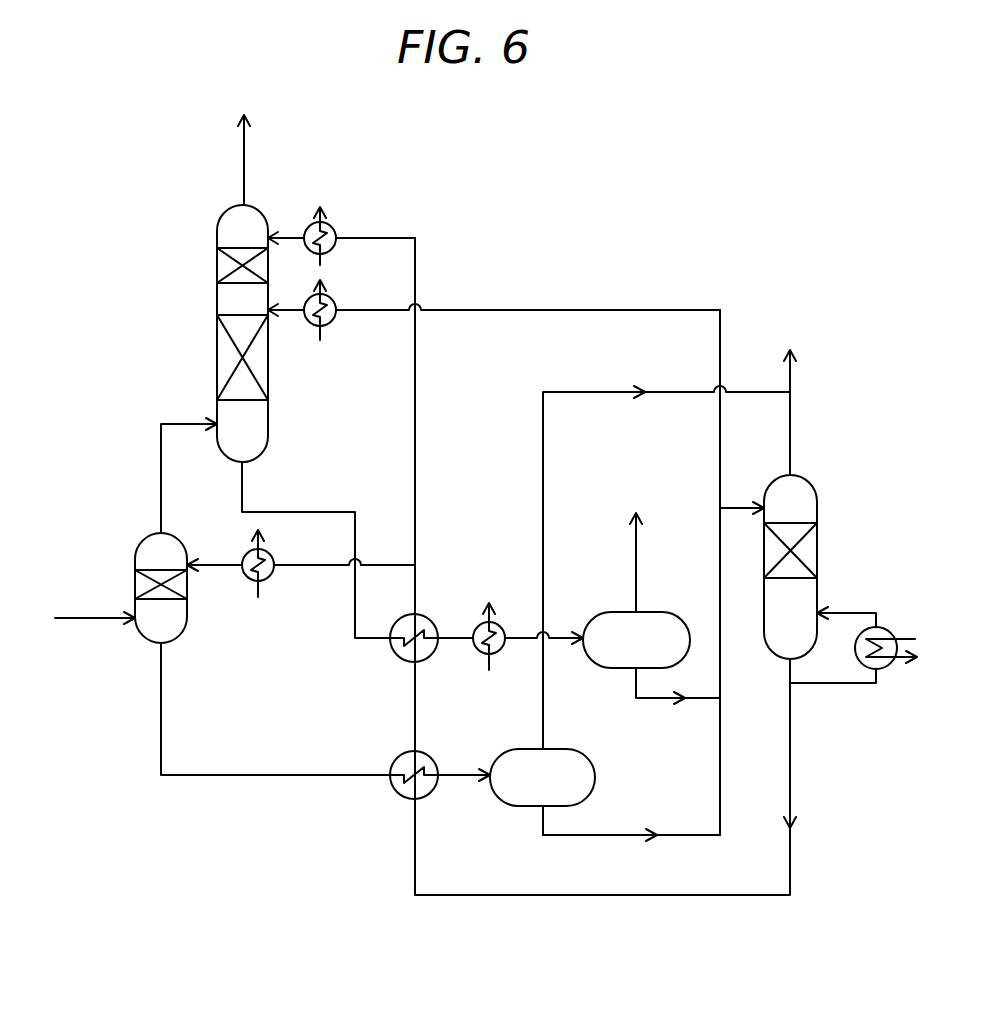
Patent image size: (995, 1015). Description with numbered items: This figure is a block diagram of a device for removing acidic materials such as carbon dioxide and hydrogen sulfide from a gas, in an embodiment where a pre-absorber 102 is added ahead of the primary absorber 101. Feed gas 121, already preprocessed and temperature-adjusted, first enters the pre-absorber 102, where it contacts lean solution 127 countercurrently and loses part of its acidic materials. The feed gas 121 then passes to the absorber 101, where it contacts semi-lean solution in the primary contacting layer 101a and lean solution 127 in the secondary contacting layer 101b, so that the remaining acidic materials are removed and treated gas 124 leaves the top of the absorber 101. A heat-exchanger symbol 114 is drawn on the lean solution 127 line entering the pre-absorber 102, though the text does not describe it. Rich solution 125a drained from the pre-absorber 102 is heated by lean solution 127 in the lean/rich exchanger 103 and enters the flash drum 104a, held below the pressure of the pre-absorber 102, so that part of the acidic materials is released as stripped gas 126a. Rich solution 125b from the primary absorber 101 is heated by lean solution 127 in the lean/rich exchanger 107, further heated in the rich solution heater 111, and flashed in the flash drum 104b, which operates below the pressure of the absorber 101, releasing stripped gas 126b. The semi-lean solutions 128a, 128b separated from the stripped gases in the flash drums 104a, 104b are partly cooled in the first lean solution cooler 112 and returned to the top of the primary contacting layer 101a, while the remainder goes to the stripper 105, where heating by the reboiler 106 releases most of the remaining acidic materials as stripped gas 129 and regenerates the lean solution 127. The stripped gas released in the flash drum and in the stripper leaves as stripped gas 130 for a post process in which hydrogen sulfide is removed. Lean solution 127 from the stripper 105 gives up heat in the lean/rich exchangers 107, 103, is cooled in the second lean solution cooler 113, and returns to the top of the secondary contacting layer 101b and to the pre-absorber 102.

The absorber 101 is at (217, 228).
The primary contacting layer 101a is at (222, 352).
The secondary contacting layer 101b is at (222, 270).
The pre-absorber 102 is at (135, 552).
The lean/rich exchanger 103 is at (392, 792).
The flash drum 104a is at (511, 749).
The flash drum 104b is at (596, 612).
The stripper 105 is at (818, 582).
The reboiler 106 is at (893, 632).
The lean/rich exchanger 107 is at (392, 652).
The rich solution heater 111 is at (476, 626).
The first lean solution cooler 112 is at (332, 302).
The second lean solution cooler 113 is at (332, 228).
The cooler 114 is at (276, 554).
The feed gas 121 is at (80, 618).
The treated gas 124 is at (243, 165).
The rich solution 125a is at (247, 777).
The rich solution 125b is at (297, 512).
The stripped gas 126a is at (543, 545).
The stripped gas 126b is at (636, 545).
The lean solution 127 is at (611, 896).
The liquid line from first separator 128a is at (540, 815).
The liquid line from second separator 128b is at (634, 686).
The stripped gas 129 is at (793, 448).
The stripped gas 130 is at (793, 372).